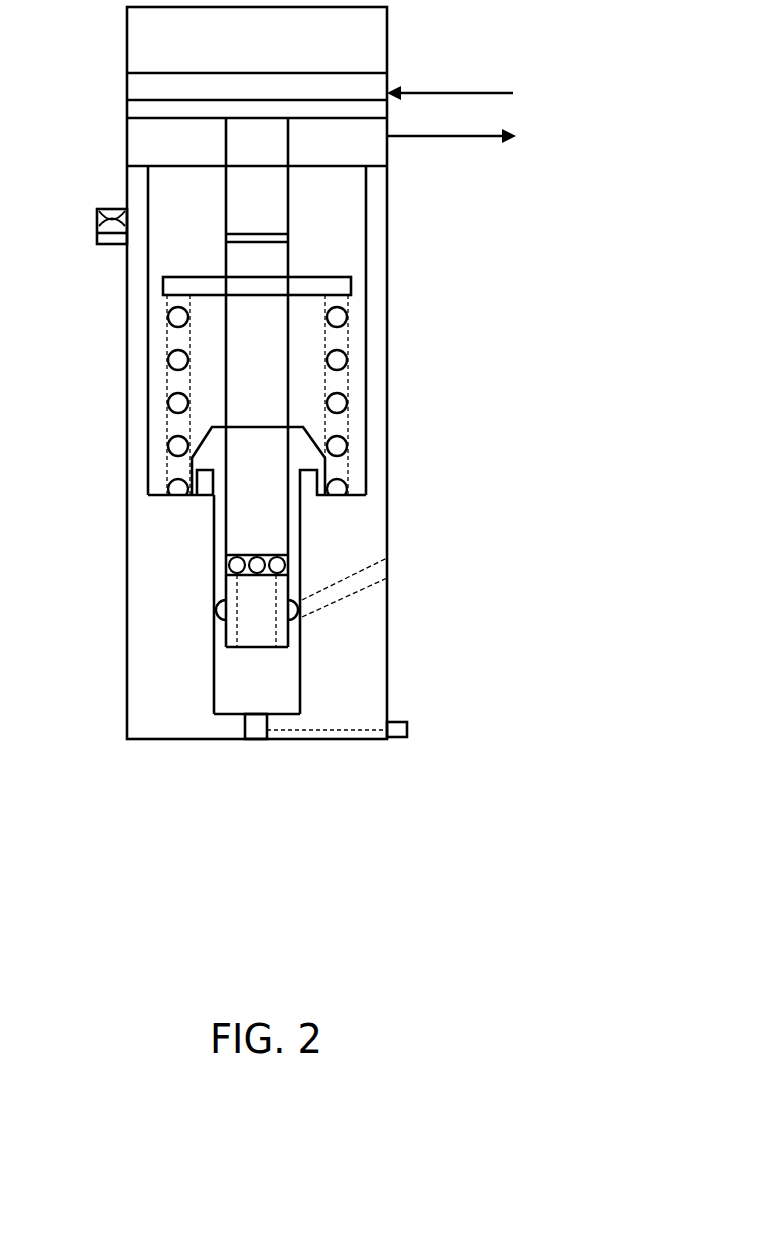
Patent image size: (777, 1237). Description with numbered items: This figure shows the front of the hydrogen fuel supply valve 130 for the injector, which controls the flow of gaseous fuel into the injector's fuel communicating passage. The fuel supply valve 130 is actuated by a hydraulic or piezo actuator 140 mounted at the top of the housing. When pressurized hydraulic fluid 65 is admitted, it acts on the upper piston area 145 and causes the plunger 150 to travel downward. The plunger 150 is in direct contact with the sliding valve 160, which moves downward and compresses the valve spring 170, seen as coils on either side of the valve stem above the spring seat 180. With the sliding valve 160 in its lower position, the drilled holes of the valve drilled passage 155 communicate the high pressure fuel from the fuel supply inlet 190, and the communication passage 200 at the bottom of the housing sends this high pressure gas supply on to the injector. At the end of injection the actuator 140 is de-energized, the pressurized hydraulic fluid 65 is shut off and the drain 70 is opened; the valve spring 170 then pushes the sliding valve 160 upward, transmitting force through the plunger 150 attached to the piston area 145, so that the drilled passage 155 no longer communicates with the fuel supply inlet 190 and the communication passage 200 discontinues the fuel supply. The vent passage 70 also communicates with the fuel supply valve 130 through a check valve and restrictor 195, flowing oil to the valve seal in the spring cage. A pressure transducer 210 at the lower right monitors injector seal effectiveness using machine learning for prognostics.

The pressurized hydraulic fluid 65 is at (513, 93).
The drain 70 is at (488, 136).
The fuel supply valve 130 is at (396, 395).
The hydraulic actuator or piezo actuator 140 is at (387, 28).
The upper piston area 145 is at (145, 100).
The plunger 150 is at (290, 203).
The valve drilled passage 155 is at (290, 563).
The sliding valve 160 is at (290, 346).
The valve spring 170 is at (346, 316).
The spring seat 180 is at (347, 445).
The fuel supply inlet 190 is at (347, 598).
The check valve and restrictor 195 is at (97, 218).
The communication passage 200 is at (255, 740).
The pressure transducer 210 is at (407, 727).